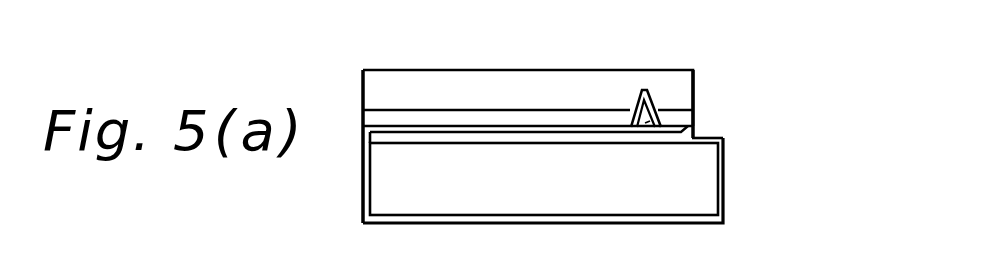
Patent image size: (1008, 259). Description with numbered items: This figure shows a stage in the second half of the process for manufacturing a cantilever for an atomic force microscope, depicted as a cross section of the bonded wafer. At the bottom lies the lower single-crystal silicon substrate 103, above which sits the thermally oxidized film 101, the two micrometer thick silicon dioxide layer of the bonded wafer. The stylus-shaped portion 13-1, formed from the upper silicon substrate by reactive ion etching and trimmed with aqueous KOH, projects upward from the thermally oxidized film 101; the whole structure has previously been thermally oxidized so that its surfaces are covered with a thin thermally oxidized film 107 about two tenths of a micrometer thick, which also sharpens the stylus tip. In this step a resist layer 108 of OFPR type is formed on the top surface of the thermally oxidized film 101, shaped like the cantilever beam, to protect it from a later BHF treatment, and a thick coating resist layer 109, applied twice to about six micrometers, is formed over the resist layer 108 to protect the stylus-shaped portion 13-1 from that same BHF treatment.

The stylus-shaped portion 13-1 is at (628, 126).
The resist layer 109 is at (680, 82).
The resist layer 108 is at (683, 118).
The thermally oxidized film 101 is at (692, 136).
The thermally oxidized film 107 is at (718, 177).
The lower single-crystal silicon substrate 103 is at (706, 212).